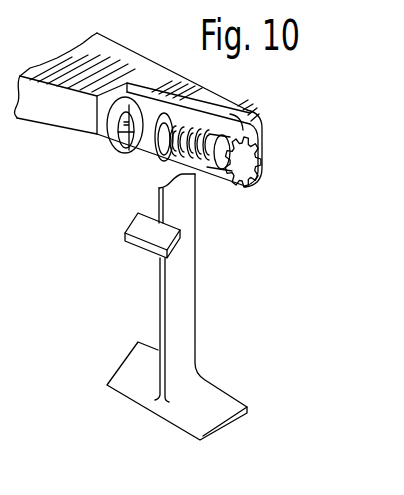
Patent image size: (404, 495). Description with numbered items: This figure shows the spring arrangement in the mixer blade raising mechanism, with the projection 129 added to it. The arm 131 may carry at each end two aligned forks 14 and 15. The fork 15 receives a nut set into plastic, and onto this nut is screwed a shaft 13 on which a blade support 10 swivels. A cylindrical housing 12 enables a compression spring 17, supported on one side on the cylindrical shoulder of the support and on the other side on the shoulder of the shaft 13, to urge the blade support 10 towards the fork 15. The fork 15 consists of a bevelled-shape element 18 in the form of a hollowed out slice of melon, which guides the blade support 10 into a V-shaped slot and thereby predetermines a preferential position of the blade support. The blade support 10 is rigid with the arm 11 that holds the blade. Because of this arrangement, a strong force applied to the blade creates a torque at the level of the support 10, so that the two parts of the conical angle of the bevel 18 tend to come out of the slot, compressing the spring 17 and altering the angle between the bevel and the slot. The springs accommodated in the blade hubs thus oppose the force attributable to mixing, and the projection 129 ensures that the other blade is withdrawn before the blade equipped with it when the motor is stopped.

The blade support 10 is at (165, 165).
The arm 11 is at (188, 290).
The cylindrical housing 12 is at (212, 163).
The shaft 13 is at (185, 148).
The fork 14 is at (254, 125).
The fork 15 is at (102, 128).
The compression spring 17 is at (209, 137).
The bevelled-shape element 18 is at (114, 138).
The projection 129 is at (177, 241).
The arm 131 is at (120, 50).